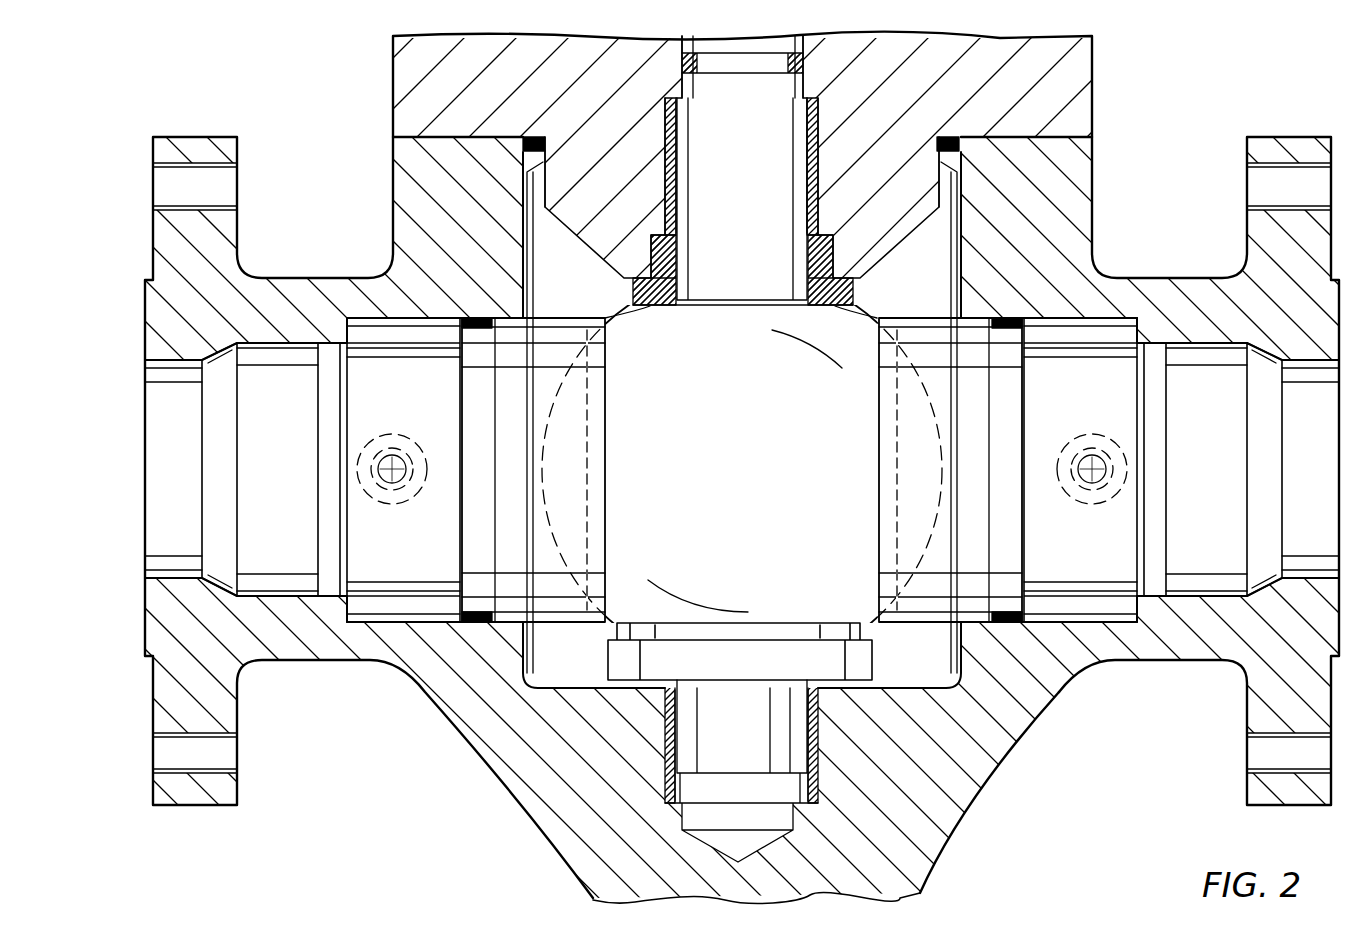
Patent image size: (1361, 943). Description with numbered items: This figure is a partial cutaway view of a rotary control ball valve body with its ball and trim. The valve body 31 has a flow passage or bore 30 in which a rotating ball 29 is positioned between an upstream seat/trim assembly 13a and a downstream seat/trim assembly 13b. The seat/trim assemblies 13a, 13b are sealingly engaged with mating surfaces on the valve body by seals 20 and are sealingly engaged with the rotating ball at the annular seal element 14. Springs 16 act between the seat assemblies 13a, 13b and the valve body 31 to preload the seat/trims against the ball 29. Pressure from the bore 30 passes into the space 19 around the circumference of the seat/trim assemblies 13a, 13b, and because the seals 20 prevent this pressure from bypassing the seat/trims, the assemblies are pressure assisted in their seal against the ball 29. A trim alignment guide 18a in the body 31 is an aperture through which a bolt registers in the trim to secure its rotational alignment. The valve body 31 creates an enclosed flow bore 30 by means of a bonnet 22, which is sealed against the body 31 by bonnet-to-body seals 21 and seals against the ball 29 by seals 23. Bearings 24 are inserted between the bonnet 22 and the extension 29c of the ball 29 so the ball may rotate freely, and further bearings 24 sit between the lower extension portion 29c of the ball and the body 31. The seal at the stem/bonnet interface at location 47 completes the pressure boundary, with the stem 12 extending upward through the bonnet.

The valve stem 12 is at (700, 830).
The upstream seat/trim assembly 13a is at (350, 378).
The downstream seat/trim assembly 13b is at (1122, 398).
The annular seal element 14 is at (592, 345).
The springs 16 is at (534, 292).
The trim alignment guide 18a is at (392, 505).
The space 19 is at (372, 612).
The seals 20 is at (472, 624).
The bonnet-to-body seals 21 is at (947, 137).
The bonnet 22 is at (1085, 100).
The seals 23 is at (835, 278).
The bearings 24 is at (817, 138).
The rotating ball 29 is at (755, 460).
The extension of ball 29c is at (672, 150).
The flow passage (bore) 30 is at (141, 409).
The valve body 31 is at (968, 764).
The stem/bonnet interface seal location 47 is at (803, 58).